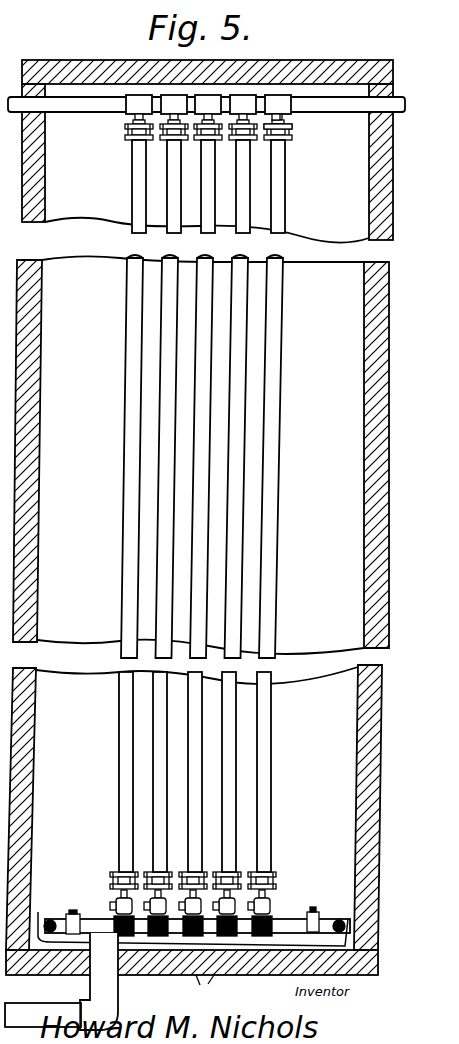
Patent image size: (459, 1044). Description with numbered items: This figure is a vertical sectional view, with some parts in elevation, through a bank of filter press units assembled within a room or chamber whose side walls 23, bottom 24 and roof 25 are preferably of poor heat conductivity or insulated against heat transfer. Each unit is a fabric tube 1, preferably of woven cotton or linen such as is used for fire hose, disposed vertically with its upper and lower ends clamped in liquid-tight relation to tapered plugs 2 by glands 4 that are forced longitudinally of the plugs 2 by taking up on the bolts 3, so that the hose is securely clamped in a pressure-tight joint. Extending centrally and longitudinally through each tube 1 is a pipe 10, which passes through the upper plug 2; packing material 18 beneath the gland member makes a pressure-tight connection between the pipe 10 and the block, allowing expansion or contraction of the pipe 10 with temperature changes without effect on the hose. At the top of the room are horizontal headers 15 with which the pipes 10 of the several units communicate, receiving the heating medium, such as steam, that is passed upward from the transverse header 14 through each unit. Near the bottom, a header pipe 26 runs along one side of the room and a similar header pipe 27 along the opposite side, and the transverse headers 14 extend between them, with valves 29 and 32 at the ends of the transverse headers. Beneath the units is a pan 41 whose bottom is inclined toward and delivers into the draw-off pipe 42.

The tube 1 is at (276, 184).
The tapered plug 2 is at (128, 128).
The bolt 3 is at (292, 134).
The gland 4 is at (134, 140).
The pipe 10 is at (282, 121).
The transverse header 14 is at (90, 916).
The exhaust header 15 is at (340, 105).
The packing material 18 is at (124, 905).
The side wall 23 is at (199, 506).
The bottom 24 is at (212, 980).
The roof 25 is at (78, 60).
The header pipe 26 is at (50, 918).
The header pipe 27 is at (339, 918).
The valve 29 is at (72, 912).
The valve 32 is at (313, 910).
The pan 41 is at (202, 977).
The draw-off pipe 42 is at (92, 986).